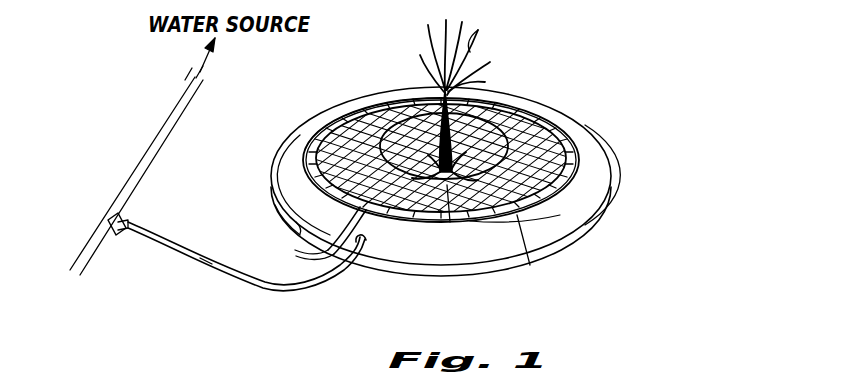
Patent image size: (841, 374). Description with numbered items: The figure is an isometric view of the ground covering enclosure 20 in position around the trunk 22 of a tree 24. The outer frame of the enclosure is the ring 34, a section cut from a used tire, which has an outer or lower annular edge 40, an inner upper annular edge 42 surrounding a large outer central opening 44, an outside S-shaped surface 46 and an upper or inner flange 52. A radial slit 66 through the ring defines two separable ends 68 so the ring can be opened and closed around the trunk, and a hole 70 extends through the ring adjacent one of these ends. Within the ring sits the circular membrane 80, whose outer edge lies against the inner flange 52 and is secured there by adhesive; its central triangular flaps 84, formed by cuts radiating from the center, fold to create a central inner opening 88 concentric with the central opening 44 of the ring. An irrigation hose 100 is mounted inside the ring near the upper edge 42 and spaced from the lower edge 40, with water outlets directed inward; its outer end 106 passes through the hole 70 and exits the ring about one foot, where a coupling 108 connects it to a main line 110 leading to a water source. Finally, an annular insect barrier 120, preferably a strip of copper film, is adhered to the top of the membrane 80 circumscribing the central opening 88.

The ground covering enclosure 20 is at (608, 90).
The trunk 22 is at (470, 100).
The tree 24 is at (470, 52).
The ring 34 is at (590, 127).
The outer or lower annular edge 40 is at (612, 186).
The inner upper annular edge 42 is at (590, 163).
The outer central opening 44 is at (523, 108).
The outside S-shaped surface 46 is at (557, 213).
The upper or inner flange 52 is at (416, 226).
The radial slit 66 is at (305, 225).
The separable ends 68 is at (330, 257).
The hole 70 is at (360, 244).
The membrane 80 is at (525, 228).
The central triangular flaps 84 is at (450, 222).
The central inner opening 88 is at (375, 92).
The irrigation hose 100 is at (283, 290).
The outer end 106 is at (215, 264).
The coupling 108 is at (115, 236).
The main line 110 is at (150, 133).
The annular insect barrier 120 is at (427, 130).